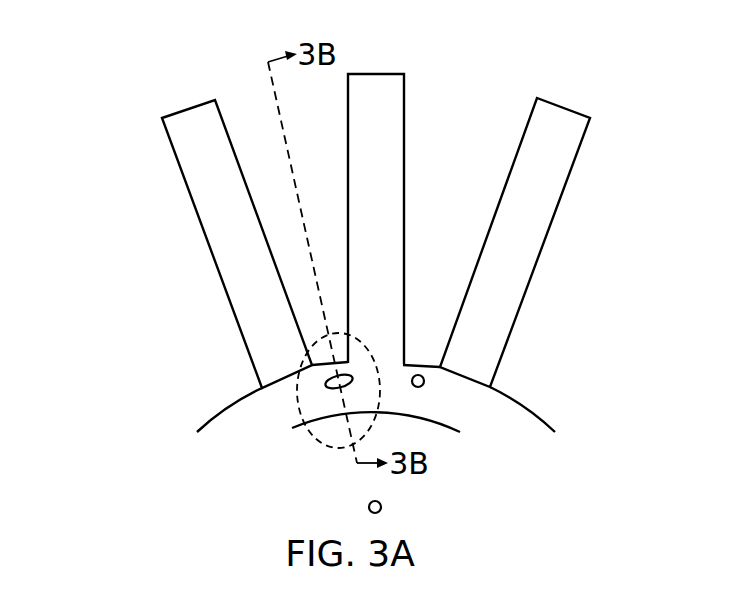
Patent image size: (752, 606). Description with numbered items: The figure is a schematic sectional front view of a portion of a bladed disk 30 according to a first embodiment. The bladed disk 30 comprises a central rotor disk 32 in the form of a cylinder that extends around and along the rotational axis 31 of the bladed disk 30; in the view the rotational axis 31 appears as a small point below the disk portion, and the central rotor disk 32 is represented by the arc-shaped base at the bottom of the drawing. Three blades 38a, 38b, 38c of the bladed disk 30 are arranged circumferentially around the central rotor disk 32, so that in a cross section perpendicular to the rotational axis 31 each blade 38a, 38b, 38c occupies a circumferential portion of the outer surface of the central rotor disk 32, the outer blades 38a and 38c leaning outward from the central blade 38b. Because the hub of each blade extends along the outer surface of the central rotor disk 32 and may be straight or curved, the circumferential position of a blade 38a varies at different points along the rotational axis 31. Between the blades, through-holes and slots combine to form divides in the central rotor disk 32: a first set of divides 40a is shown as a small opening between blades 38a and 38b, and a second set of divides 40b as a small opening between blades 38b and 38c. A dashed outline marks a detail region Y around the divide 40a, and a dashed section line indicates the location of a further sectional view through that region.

The bladed disk 30 is at (112, 126).
The rotational axis 31 is at (381, 506).
The central rotor disk 32 is at (236, 424).
The blade 38a is at (200, 125).
The blade 38b is at (382, 90).
The blade 38c is at (565, 117).
The first set of divides 40a is at (326, 380).
The second set of divides 40b is at (419, 375).
The detail region Y is at (309, 398).